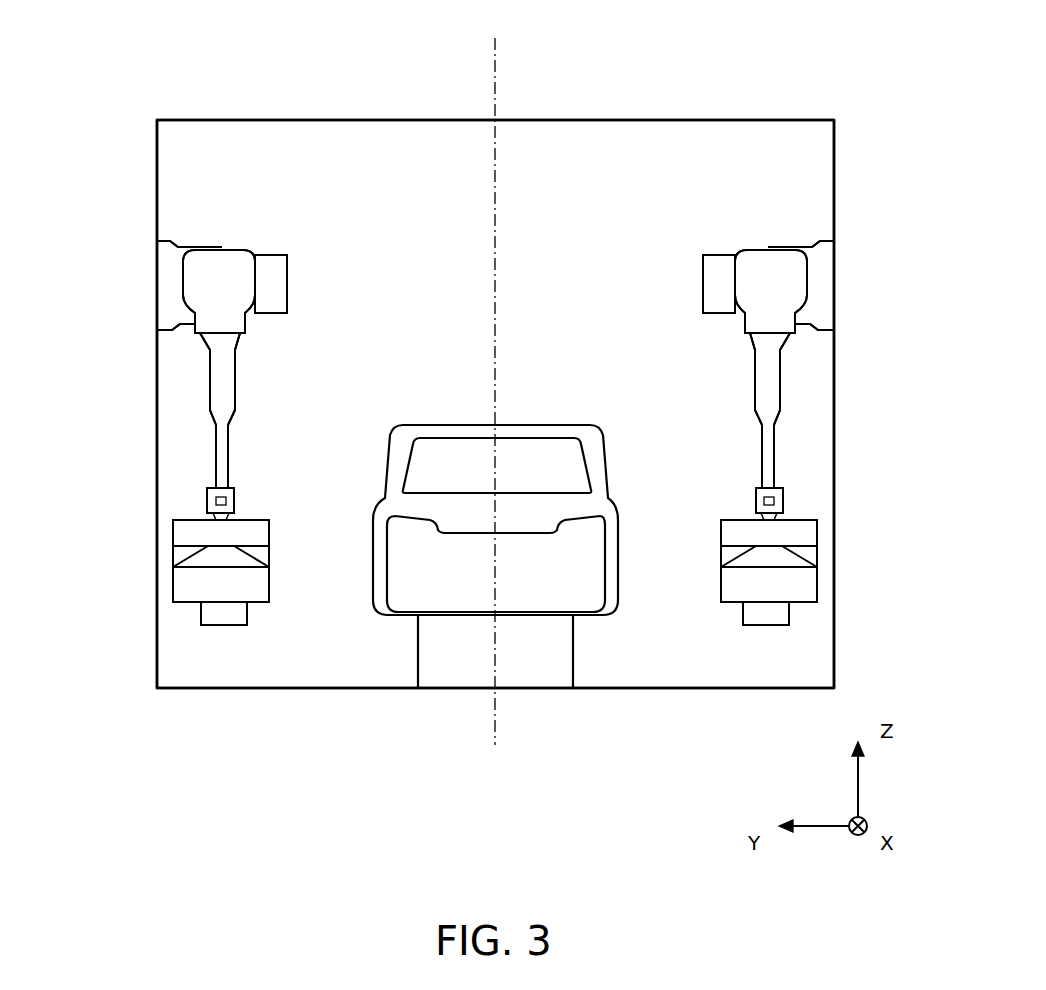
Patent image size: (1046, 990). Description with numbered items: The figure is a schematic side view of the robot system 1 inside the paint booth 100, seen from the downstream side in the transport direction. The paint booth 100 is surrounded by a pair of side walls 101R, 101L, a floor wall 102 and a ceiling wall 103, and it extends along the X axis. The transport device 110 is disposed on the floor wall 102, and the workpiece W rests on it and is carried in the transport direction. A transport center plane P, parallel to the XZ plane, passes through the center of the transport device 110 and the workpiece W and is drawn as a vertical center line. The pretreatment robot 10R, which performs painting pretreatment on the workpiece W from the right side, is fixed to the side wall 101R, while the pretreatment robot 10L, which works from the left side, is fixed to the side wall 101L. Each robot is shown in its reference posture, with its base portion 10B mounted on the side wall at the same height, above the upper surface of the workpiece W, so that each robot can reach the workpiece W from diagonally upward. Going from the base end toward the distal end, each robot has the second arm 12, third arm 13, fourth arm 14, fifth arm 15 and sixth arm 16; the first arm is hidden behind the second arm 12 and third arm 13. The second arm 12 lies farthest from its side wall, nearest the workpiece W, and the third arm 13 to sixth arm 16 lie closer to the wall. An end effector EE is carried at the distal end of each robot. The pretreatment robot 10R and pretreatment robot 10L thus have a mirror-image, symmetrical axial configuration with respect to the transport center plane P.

The robot system 1 is at (634, 102).
The paint booth 100 is at (722, 121).
The side wall 101R is at (160, 188).
The side wall 101L is at (826, 172).
The floor wall 102 is at (358, 678).
The ceiling wall 103 is at (375, 128).
The transport device 110 is at (557, 640).
The pretreatment robot 10R is at (302, 270).
The pretreatment robot 10L is at (678, 270).
The base portion 10B is at (180, 246).
The second arm 12 is at (266, 268).
The third arm 13 is at (237, 300).
The fourth arm 14 is at (225, 403).
The fifth arm 15 is at (232, 505).
The sixth arm 16 is at (232, 518).
The end effector EE is at (257, 578).
The workpiece W is at (462, 423).
The transport center plane P is at (497, 97).